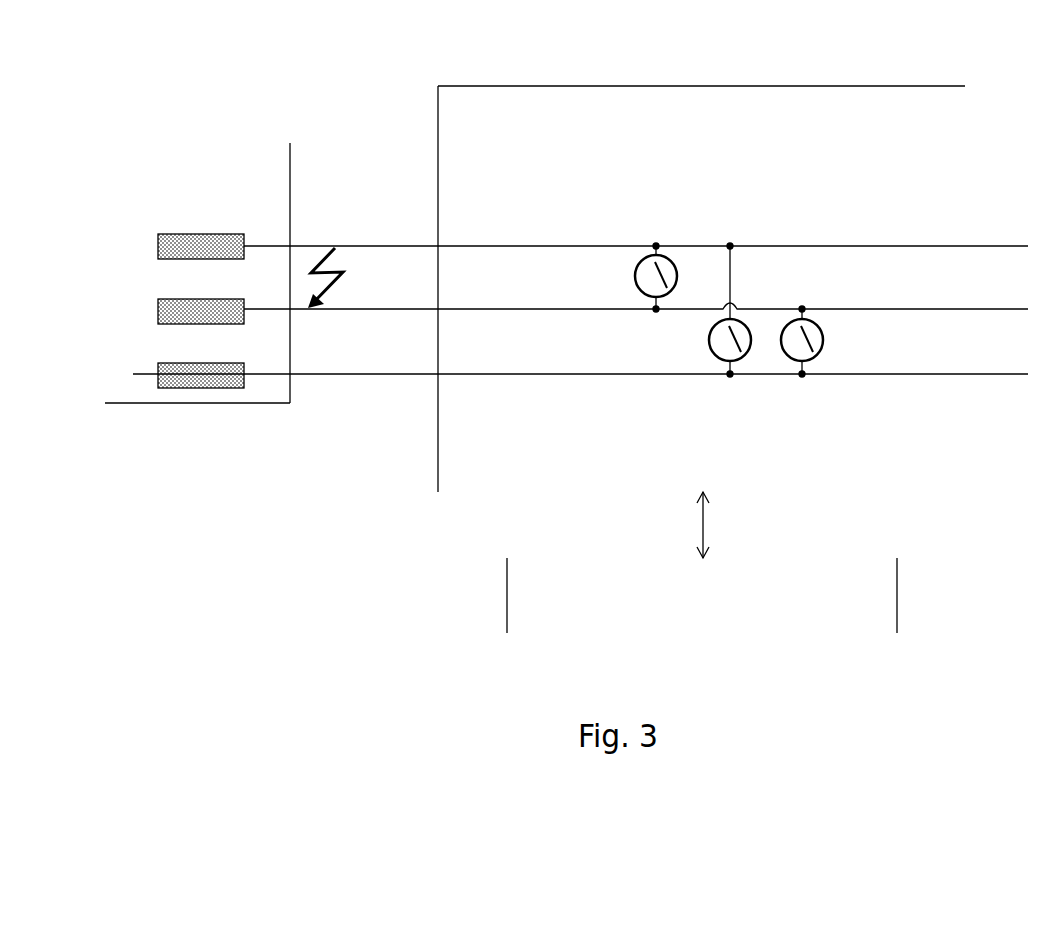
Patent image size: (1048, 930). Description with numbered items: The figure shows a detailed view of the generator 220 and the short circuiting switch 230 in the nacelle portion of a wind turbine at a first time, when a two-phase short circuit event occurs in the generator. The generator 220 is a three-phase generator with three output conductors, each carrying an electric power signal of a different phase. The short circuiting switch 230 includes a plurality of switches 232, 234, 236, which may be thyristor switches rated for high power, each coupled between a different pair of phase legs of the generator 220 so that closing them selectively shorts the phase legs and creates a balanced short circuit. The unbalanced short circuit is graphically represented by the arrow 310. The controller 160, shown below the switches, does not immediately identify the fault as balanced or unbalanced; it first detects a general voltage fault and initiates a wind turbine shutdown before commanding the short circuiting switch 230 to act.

The generator 220 is at (197, 239).
The short circuiting switch 230 is at (701, 254).
The switch 232 is at (609, 277).
The switch 234 is at (683, 310).
The switch 236 is at (846, 341).
The arrow 310 is at (345, 304).
The controller 160 is at (653, 562).